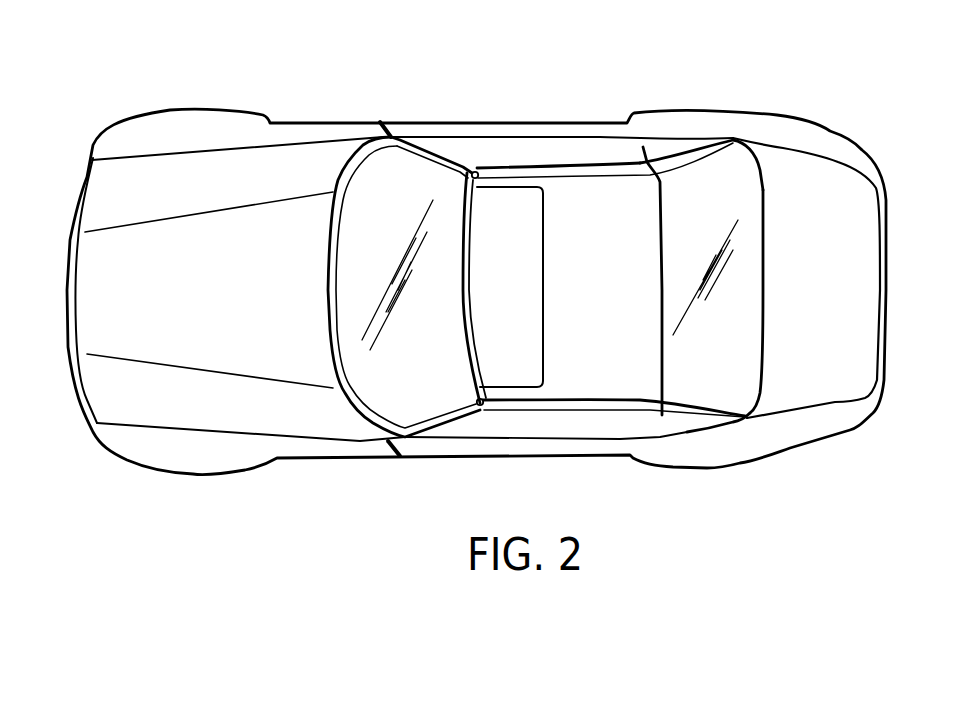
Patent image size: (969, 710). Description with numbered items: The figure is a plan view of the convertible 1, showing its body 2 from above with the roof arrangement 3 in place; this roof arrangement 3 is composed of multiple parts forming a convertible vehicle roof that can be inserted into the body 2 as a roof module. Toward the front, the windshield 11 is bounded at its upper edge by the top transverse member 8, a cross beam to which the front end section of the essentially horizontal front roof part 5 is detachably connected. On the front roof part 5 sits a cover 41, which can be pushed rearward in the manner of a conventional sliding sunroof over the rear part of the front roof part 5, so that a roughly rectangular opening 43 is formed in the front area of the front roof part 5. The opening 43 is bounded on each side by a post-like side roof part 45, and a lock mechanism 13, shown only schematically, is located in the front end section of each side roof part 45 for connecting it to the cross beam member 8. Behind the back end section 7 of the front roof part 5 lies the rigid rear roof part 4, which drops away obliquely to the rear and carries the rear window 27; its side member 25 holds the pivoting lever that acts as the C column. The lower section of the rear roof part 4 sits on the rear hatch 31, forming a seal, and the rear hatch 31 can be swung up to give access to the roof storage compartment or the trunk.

The convertible 1 is at (344, 84).
The body 2 is at (653, 447).
The roof arrangement 3 is at (574, 140).
The rear roof part 4 is at (715, 200).
The front roof part 5 is at (603, 357).
The back end section 7 is at (657, 287).
The top transverse member 8 is at (459, 288).
The windshield 11 is at (387, 368).
The lock mechanism 13 is at (473, 168).
The side member 25 is at (687, 162).
The rear window 27 is at (725, 320).
The rear hatch 31 is at (797, 203).
The cover 41 is at (507, 220).
The opening 43 is at (548, 282).
The side roof part 45 is at (503, 172).